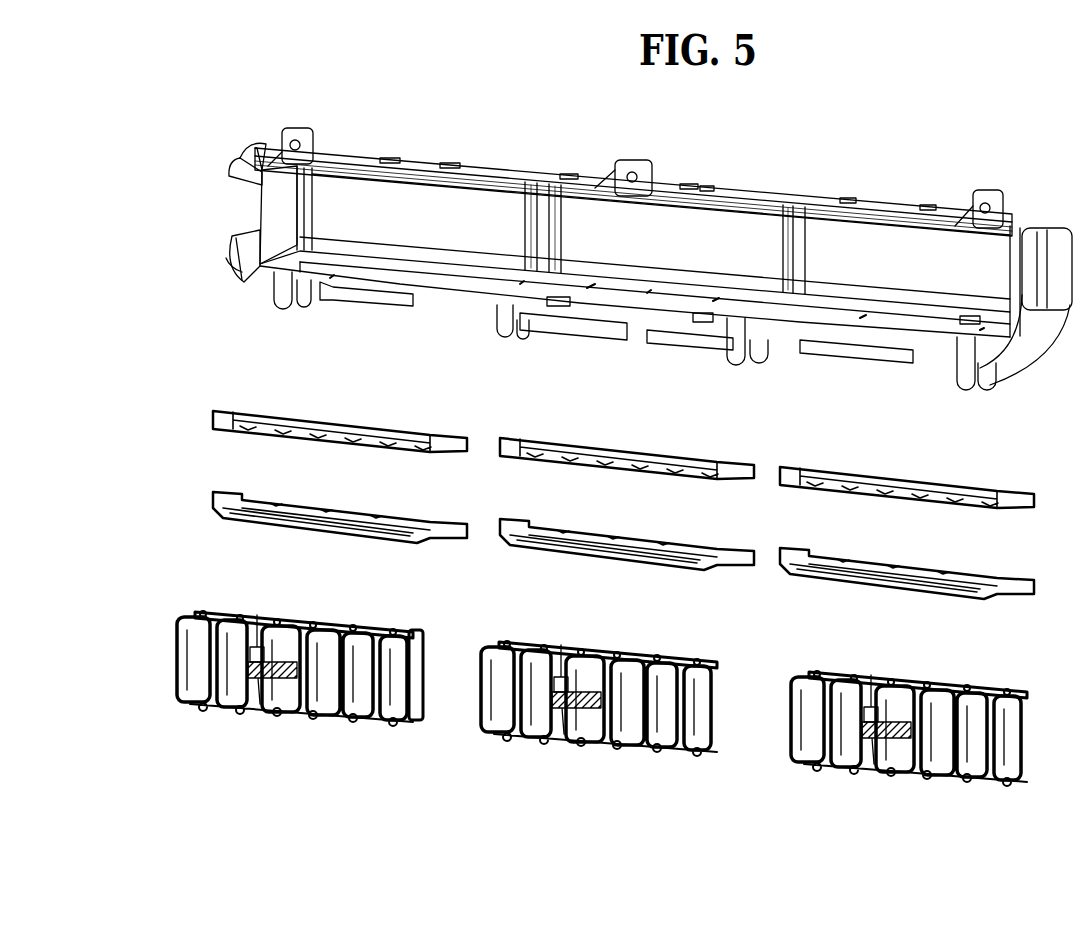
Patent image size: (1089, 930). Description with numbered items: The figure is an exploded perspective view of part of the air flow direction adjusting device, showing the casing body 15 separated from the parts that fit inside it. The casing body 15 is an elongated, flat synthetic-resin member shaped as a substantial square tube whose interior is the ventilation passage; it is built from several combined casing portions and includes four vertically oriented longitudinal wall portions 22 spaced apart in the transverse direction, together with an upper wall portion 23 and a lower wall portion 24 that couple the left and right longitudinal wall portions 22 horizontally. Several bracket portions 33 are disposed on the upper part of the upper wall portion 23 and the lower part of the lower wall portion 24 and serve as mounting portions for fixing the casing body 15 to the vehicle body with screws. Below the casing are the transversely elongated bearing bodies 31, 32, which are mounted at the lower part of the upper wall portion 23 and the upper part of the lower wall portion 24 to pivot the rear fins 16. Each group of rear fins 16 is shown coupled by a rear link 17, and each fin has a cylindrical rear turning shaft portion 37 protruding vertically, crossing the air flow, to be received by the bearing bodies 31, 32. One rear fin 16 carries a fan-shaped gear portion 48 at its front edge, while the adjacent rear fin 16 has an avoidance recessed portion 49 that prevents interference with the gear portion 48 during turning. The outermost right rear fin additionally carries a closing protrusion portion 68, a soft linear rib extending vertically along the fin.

The casing body 15 is at (649, 266).
The rear fin 16 is at (177, 664).
The rear link 17 is at (327, 632).
The longitudinal wall portion 22 is at (282, 207).
The upper wall portion 23 is at (729, 196).
The lower wall portion 24 is at (690, 298).
The bearing body 31 is at (334, 420).
The bearing body 32 is at (334, 508).
The bracket portion 33 is at (295, 132).
The rear turning shaft portion 37 is at (240, 616).
The gear portion 48 is at (261, 690).
The avoidance recessed portion 49 is at (258, 645).
The closing protrusion portion 68 is at (424, 661).